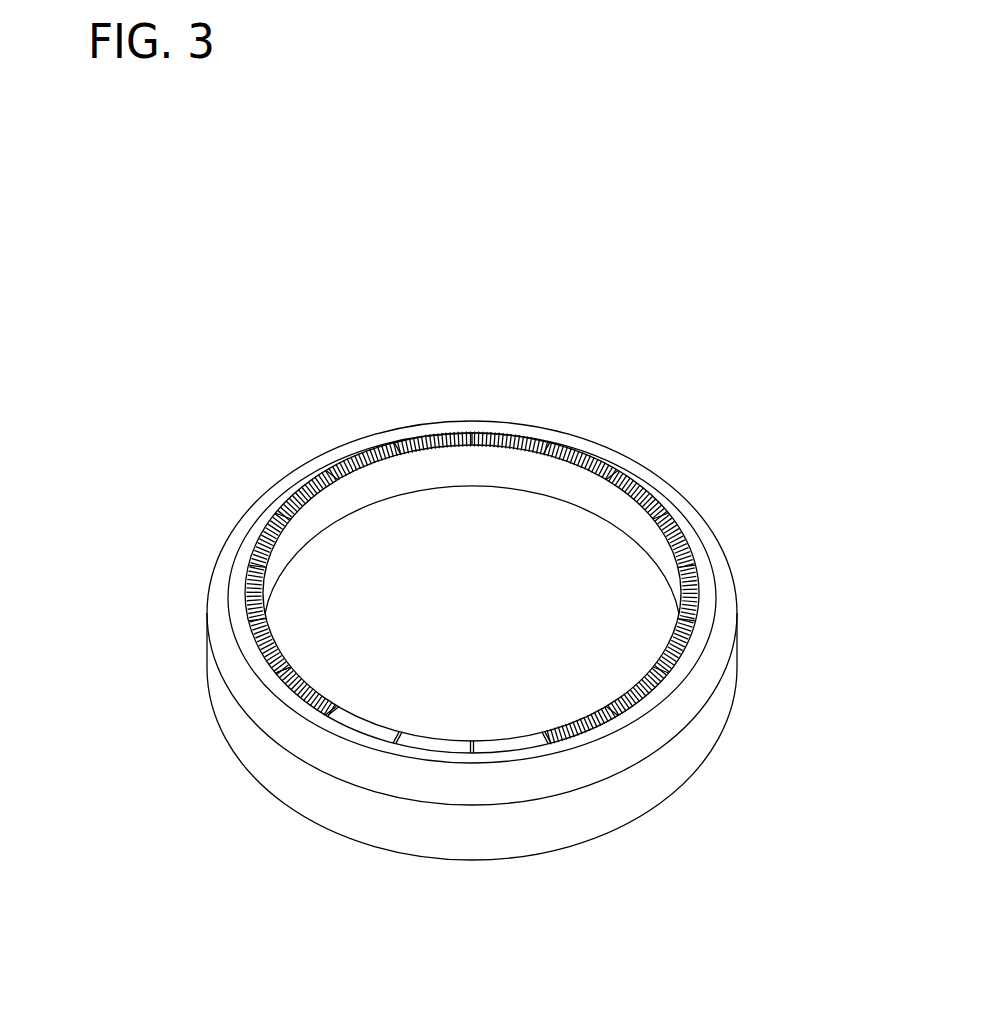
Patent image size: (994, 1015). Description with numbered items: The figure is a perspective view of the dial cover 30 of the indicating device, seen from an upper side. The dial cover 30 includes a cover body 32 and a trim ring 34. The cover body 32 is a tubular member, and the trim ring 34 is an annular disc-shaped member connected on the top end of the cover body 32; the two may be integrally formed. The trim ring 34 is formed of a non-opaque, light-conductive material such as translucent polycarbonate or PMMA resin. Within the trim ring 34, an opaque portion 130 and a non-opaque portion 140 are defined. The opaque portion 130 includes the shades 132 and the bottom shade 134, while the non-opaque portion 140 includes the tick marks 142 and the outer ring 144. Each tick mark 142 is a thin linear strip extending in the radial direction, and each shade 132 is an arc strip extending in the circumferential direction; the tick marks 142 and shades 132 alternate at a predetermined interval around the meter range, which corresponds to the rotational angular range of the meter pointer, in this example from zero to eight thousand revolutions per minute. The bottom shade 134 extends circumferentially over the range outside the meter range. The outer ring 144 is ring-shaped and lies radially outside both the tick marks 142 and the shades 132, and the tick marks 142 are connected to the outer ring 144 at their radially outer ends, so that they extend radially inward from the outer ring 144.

The dial cover 30 is at (703, 366).
The cover body 32 is at (740, 653).
The trim ring 34 is at (708, 543).
The opaque portion 130 is at (472, 593).
The shades 132 is at (267, 688).
The bottom shade 134 is at (341, 462).
The non-opaque portion 140 is at (472, 593).
The tick marks 142 is at (277, 682).
The outer ring 144 is at (548, 747).